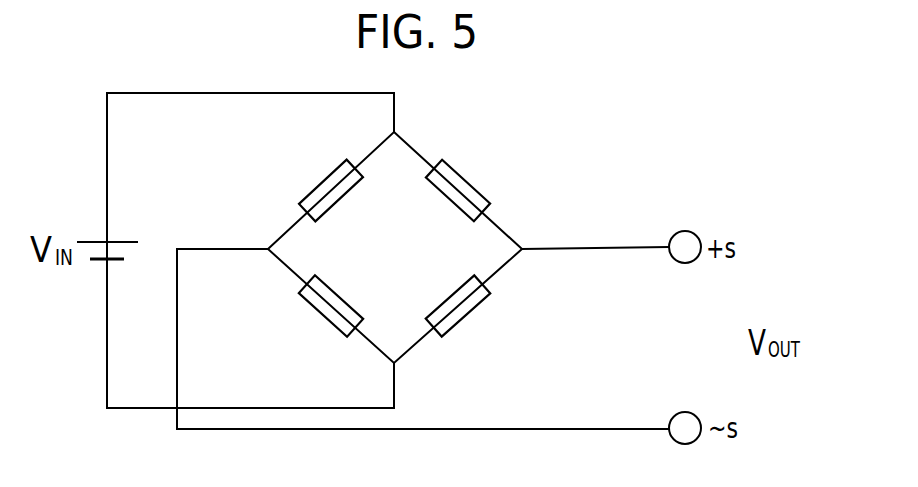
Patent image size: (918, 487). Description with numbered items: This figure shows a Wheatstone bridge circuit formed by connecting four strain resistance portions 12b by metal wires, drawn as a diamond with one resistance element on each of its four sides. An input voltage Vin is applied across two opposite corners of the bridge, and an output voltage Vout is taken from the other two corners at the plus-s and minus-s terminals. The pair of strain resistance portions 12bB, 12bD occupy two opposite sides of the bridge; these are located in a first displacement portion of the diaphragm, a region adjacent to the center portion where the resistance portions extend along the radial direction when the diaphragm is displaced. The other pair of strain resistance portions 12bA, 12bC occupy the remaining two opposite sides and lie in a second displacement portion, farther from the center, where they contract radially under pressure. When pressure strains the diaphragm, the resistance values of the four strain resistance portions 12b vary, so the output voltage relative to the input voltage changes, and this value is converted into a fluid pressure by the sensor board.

The strain resistance portion 12b is at (396, 257).
The strain resistance portion 12bA is at (470, 178).
The strain resistance portion 12bB is at (325, 175).
The strain resistance portion 12bC is at (323, 323).
The strain resistance portion 12bD is at (473, 322).